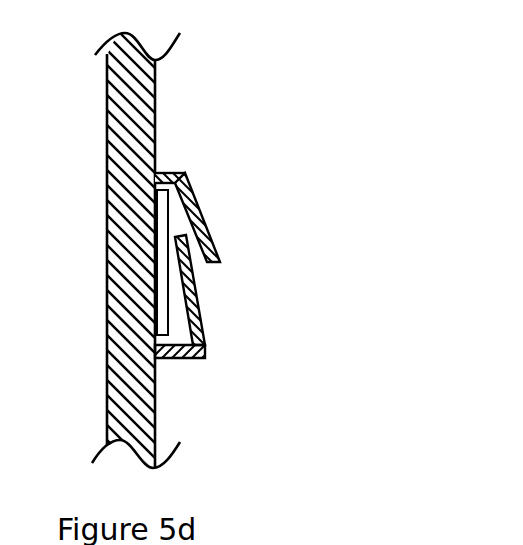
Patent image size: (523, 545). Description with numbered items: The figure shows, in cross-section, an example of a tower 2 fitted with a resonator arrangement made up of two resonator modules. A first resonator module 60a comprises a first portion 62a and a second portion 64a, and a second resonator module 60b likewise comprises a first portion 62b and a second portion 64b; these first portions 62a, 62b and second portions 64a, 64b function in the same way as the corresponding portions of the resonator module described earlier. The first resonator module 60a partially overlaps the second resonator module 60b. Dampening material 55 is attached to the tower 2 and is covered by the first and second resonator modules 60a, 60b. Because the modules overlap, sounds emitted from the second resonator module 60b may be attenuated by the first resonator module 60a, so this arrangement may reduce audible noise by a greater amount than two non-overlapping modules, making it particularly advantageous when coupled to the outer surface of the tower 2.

The tower 2 is at (108, 323).
The dampening material 55 is at (170, 303).
The first resonator module 60a is at (261, 272).
The first portion 62a is at (202, 215).
The second portion 64a is at (170, 173).
The second resonator module 60b is at (261, 272).
The first portion 62b is at (202, 330).
The second portion 64b is at (177, 362).